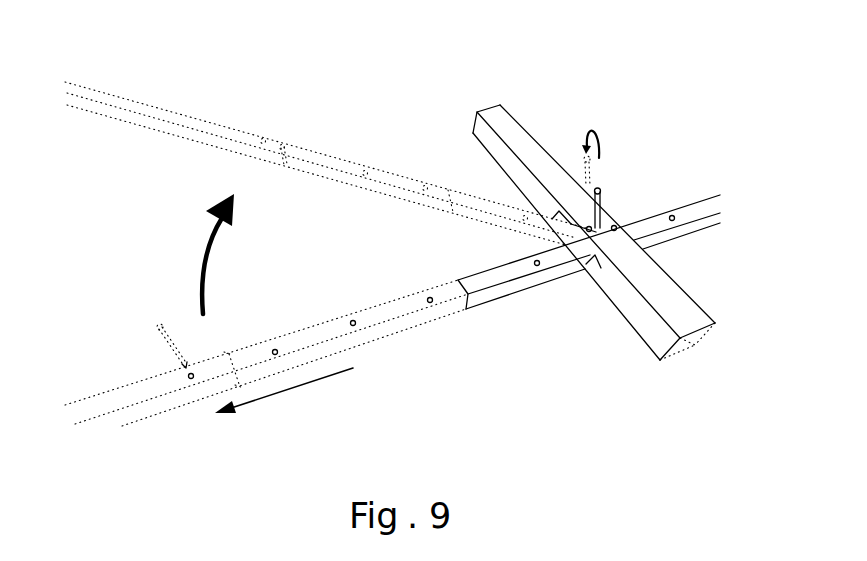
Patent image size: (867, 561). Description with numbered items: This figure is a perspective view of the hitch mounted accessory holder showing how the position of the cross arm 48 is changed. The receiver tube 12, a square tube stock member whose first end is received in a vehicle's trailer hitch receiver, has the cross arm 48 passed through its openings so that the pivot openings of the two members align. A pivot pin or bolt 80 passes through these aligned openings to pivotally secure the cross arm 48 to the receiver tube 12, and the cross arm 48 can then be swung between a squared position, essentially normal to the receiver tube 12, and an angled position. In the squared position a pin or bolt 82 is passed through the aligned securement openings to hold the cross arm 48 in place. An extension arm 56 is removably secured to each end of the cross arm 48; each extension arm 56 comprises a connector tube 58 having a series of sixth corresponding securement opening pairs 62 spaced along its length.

The receiver tube 12 is at (604, 288).
The cross arm 48 is at (502, 298).
The extension arm 56 is at (118, 388).
The connector tube 58 is at (363, 310).
The sixth corresponding securement opening pairs 62 is at (275, 350).
The pivot pin or bolt 80 is at (615, 228).
The pin or bolt 82 is at (598, 190).